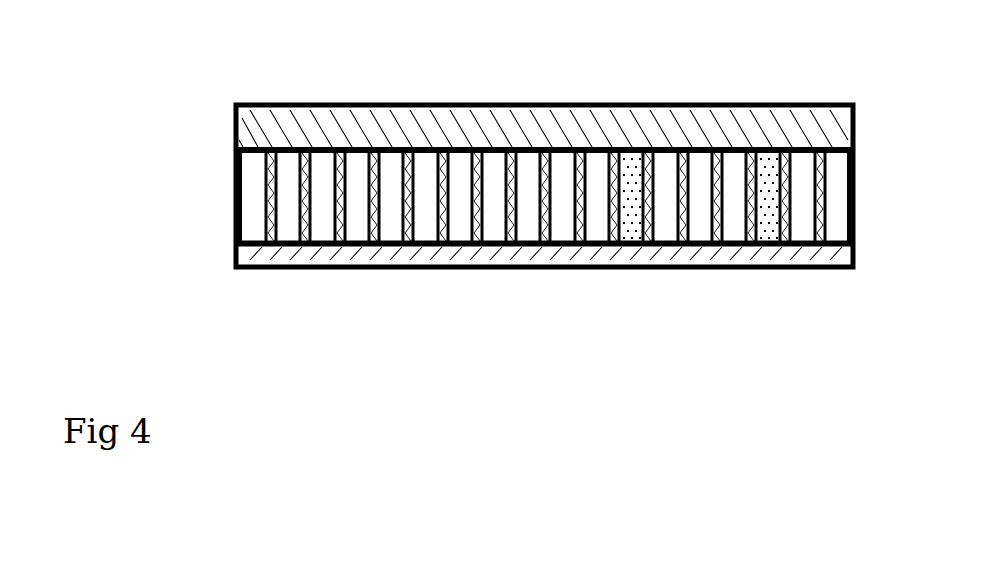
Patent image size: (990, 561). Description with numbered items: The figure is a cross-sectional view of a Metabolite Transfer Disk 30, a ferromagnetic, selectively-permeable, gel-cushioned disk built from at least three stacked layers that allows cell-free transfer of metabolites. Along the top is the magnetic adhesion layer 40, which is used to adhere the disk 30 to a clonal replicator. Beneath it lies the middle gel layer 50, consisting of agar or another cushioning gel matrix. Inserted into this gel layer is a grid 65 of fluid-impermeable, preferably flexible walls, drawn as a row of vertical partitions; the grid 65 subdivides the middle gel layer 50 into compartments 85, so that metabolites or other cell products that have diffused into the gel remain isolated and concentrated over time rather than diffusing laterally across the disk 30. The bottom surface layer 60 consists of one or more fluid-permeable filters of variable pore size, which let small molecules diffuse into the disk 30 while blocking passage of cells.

The Metabolite Transfer Disk 30 is at (208, 119).
The top magnetic adhesion layer 40 is at (280, 127).
The middle gel layer 50 is at (855, 180).
The bottom surface layer 60 is at (852, 256).
The grid 65 is at (407, 155).
The compartments 85 is at (665, 172).